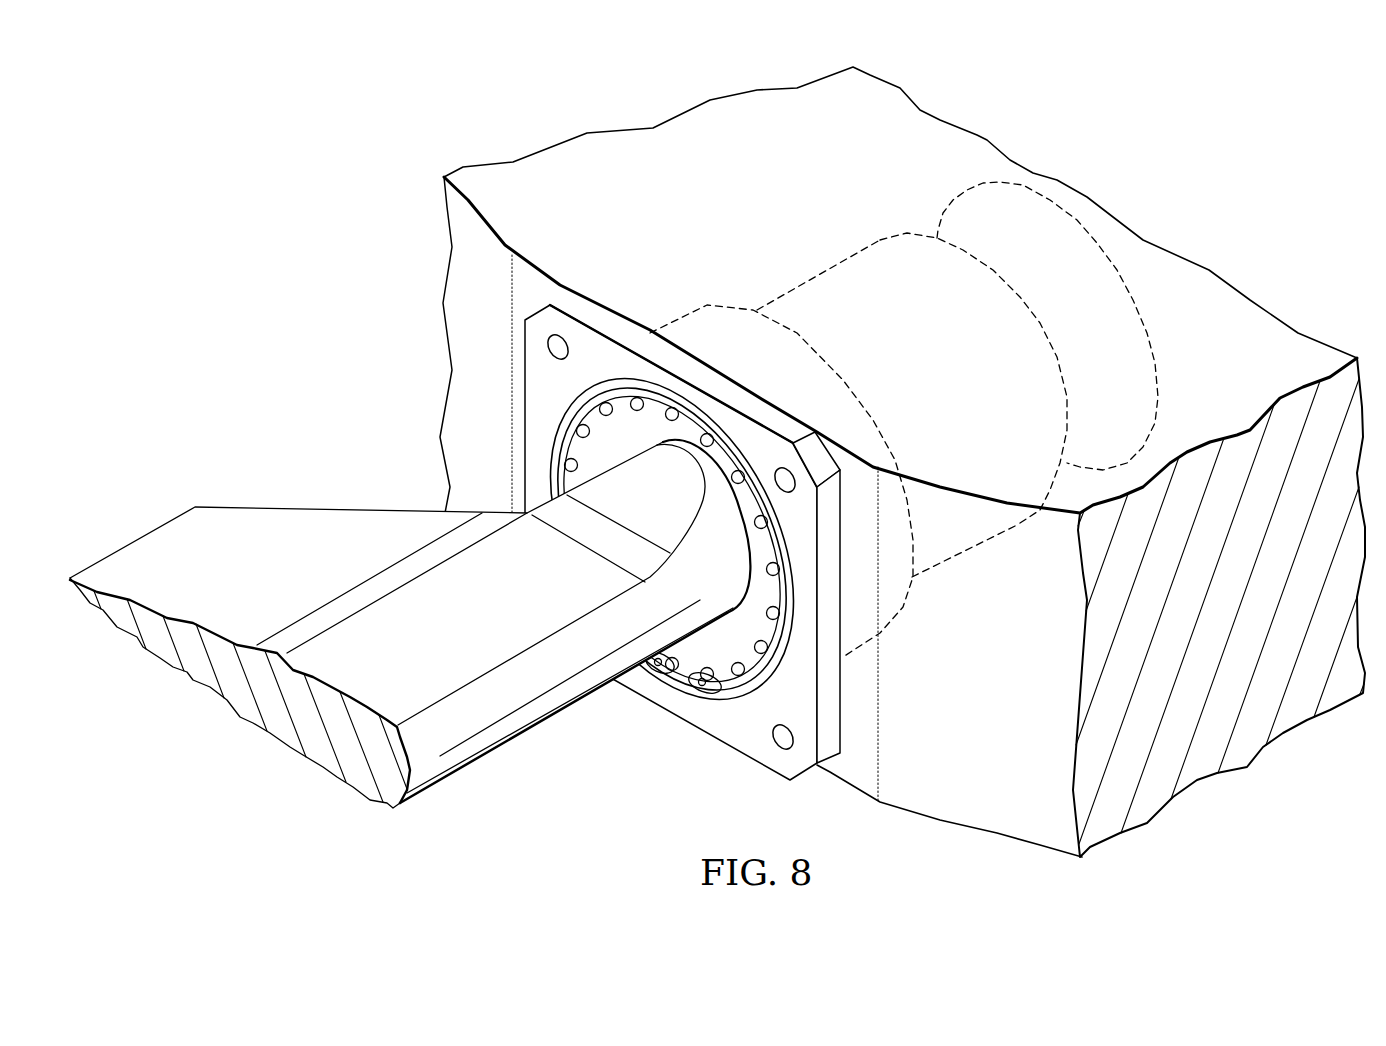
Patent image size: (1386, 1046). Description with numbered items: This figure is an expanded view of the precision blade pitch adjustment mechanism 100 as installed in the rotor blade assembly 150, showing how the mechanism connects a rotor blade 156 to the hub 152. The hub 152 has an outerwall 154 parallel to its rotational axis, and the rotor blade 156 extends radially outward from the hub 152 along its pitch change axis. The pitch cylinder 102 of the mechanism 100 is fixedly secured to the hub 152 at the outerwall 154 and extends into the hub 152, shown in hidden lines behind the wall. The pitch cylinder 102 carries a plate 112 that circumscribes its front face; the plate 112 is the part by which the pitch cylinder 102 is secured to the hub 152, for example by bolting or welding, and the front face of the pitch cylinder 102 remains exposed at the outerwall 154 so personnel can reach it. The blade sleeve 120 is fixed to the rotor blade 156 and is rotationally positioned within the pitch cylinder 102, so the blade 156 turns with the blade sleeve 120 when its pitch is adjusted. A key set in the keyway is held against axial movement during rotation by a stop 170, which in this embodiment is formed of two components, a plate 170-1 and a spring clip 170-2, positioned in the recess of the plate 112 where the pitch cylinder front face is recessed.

The precision blade pitch adjustment mechanism 100 is at (600, 258).
The pitch cylinder 102 is at (705, 306).
The plate 112 is at (545, 390).
The blade sleeve 120 is at (880, 238).
The rotor blade assembly 150 is at (540, 100).
The hub 152 is at (712, 116).
The outerwall 154 is at (945, 808).
The rotor blade 156 is at (170, 538).
The stop 170 is at (700, 705).
The plate 170-1 is at (673, 688).
The spring clip 170-2 is at (738, 690).